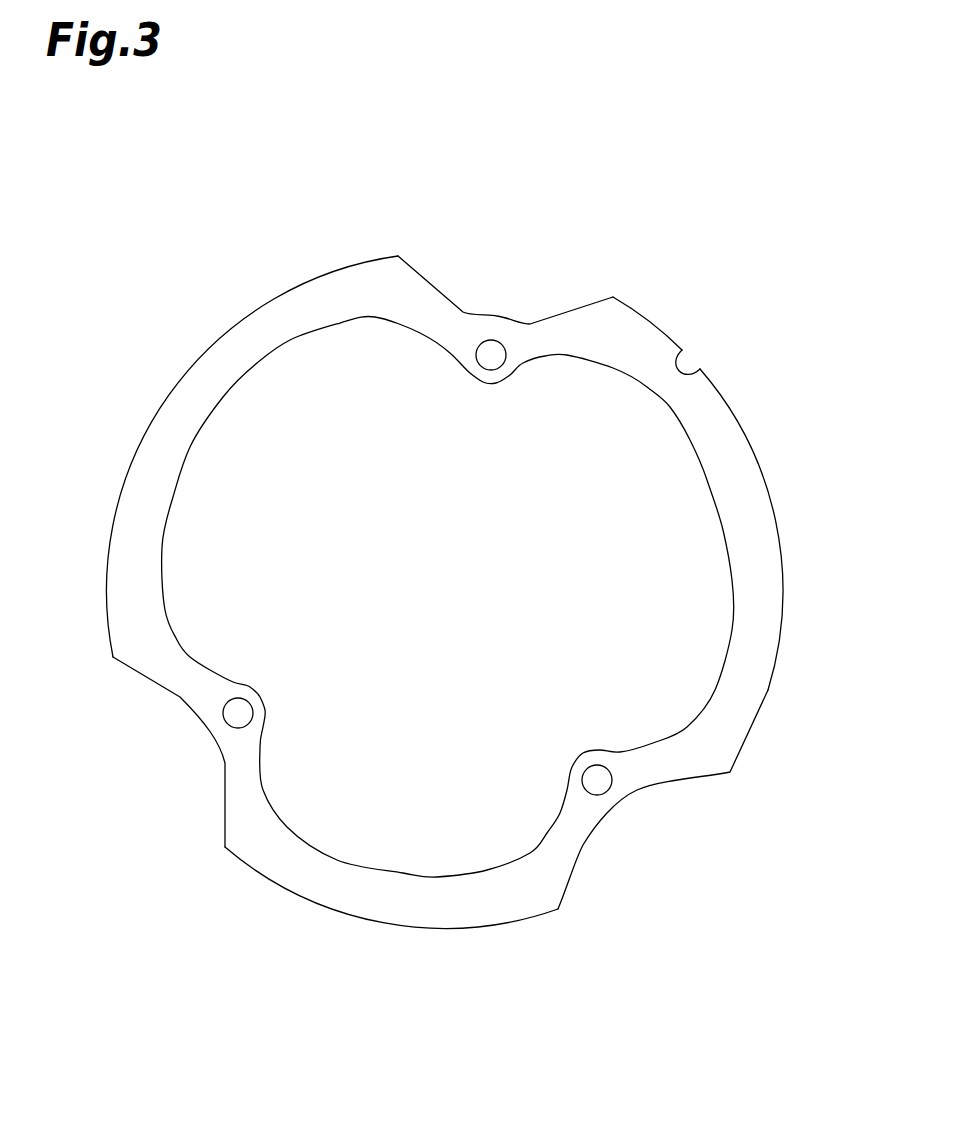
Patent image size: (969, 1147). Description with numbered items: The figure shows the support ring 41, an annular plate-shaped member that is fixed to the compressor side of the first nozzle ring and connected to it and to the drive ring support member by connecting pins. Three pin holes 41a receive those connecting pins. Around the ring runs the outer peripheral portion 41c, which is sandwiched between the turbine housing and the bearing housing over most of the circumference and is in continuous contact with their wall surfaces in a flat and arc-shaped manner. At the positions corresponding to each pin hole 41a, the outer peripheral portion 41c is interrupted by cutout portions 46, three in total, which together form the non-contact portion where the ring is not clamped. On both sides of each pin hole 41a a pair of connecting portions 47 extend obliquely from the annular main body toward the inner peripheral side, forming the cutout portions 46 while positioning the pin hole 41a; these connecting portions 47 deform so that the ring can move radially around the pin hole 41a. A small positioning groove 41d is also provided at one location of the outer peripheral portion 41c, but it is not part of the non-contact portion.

The support ring 41 is at (246, 267).
The pin hole 41a is at (490, 353).
The outer peripheral portion 41c is at (768, 527).
The groove 41d is at (690, 367).
The cutout portion 46 is at (495, 303).
The connecting portion 47 is at (388, 287).